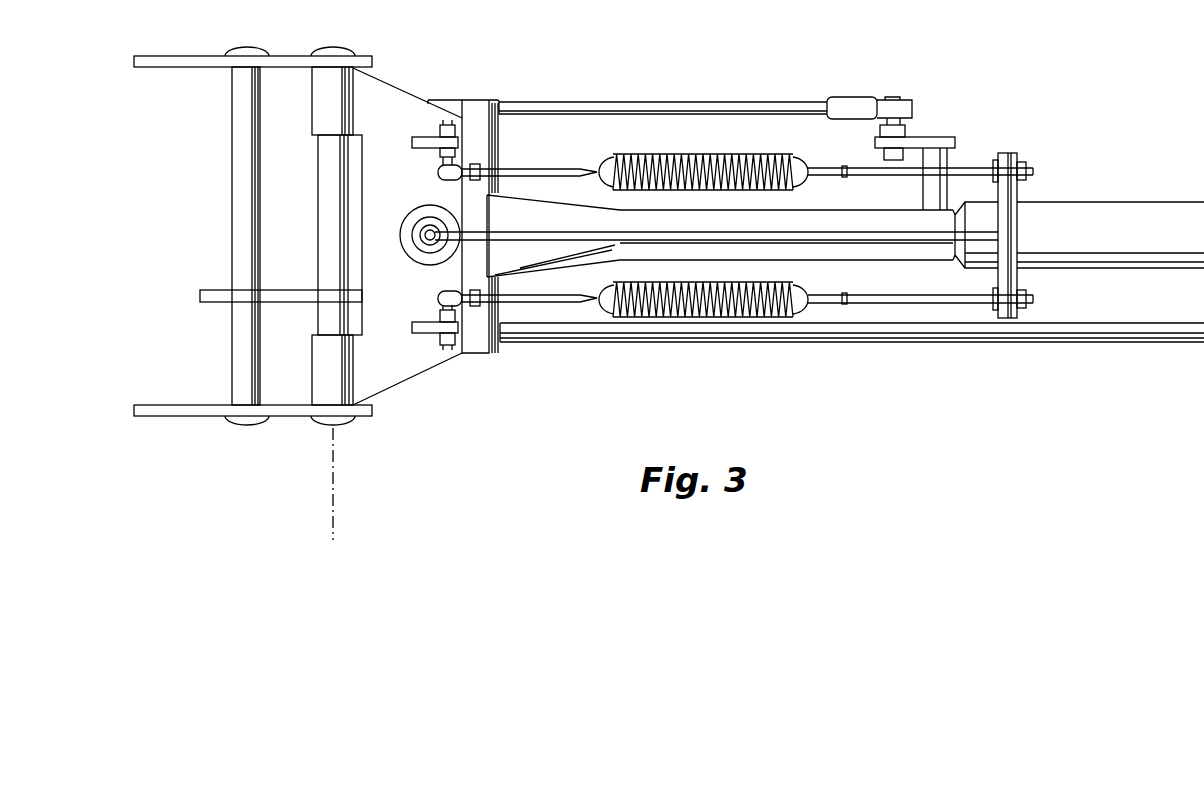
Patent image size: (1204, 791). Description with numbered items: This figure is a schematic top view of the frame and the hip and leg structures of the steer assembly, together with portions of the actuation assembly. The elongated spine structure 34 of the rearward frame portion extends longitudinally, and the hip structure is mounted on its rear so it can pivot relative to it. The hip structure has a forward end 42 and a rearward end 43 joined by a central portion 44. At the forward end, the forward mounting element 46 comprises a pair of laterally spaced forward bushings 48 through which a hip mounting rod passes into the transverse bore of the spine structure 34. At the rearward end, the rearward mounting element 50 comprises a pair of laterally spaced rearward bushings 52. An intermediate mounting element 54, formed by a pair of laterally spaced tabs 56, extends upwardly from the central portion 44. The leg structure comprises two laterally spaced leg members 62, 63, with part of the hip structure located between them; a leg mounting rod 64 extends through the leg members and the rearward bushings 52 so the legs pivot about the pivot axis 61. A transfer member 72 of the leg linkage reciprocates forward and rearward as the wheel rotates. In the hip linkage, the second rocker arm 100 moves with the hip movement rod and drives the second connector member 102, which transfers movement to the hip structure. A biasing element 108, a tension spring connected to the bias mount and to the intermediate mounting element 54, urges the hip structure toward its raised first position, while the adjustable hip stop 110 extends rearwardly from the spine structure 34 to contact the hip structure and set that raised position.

The spine structure 34 is at (820, 223).
The forward end 42 is at (515, 360).
The rearward end 43 is at (380, 400).
The central portion 44 is at (407, 355).
The forward mounting element 46 is at (487, 336).
The forward bushings 48 is at (477, 149).
The rearward mounting element 50 is at (333, 365).
The rearward bushings 52 is at (332, 93).
The intermediate mounting element 54 is at (448, 110).
The tabs 56 is at (413, 137).
The pivot axis 61 is at (337, 492).
The leg member 62 is at (170, 412).
The leg member 63 is at (172, 56).
The leg mounting rod 64 is at (330, 215).
The transfer member 72 is at (790, 330).
The second rocker arm 100 is at (920, 142).
The second connector member 102 is at (723, 108).
The biasing element 108 is at (684, 161).
The hip stop 110 is at (430, 233).